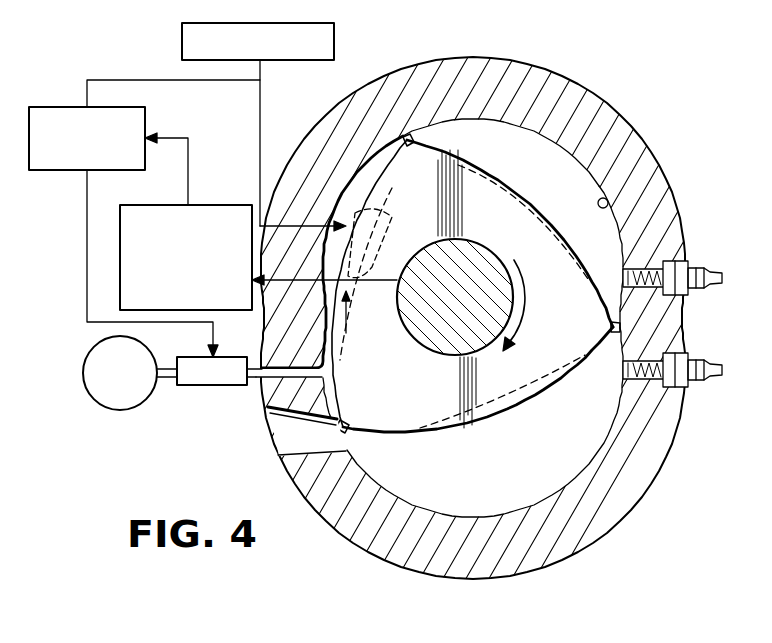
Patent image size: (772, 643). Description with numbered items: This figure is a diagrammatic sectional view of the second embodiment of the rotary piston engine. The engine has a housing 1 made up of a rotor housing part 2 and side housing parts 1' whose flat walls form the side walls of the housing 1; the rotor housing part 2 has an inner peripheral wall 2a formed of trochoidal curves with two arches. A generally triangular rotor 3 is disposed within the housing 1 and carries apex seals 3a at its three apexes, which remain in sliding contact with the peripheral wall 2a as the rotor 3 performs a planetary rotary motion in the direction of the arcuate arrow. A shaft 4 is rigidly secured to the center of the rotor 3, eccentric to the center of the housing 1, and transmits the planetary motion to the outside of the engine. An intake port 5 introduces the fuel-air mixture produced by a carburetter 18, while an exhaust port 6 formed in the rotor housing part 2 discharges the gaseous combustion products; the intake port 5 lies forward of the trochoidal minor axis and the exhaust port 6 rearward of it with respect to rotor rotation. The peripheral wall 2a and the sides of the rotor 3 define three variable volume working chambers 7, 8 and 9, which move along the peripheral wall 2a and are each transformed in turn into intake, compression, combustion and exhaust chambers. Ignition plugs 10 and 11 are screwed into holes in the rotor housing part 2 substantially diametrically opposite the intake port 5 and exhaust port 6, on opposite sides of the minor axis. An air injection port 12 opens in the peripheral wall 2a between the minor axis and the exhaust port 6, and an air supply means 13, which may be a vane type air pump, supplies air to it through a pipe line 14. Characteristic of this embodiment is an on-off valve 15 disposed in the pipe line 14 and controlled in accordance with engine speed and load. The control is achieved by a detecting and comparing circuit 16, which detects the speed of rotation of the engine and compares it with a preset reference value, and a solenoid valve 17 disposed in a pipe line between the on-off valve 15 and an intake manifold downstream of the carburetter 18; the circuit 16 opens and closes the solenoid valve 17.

The housing 1 is at (473, 318).
The side housing part 1' is at (581, 214).
The rotor housing part 2 is at (633, 145).
The peripheral wall 2a is at (608, 203).
The rotor 3 is at (523, 227).
The apex seals 3a is at (408, 148).
The shaft 4 is at (416, 333).
The intake port 5 is at (338, 212).
The exhaust port 6 is at (334, 445).
The working chamber 7 is at (382, 160).
The working chamber 8 is at (512, 145).
The working chamber 9 is at (523, 465).
The ignition plug 10 is at (645, 388).
The ignition plug 11 is at (645, 292).
The air injection port 12 is at (293, 370).
The air supply means 13 is at (120, 410).
The pipe line 14 is at (262, 380).
The on-off valve 15 is at (190, 386).
The detecting and comparing circuit 16 is at (226, 205).
The solenoid valve 17 is at (62, 107).
The carburetter 18 is at (335, 44).